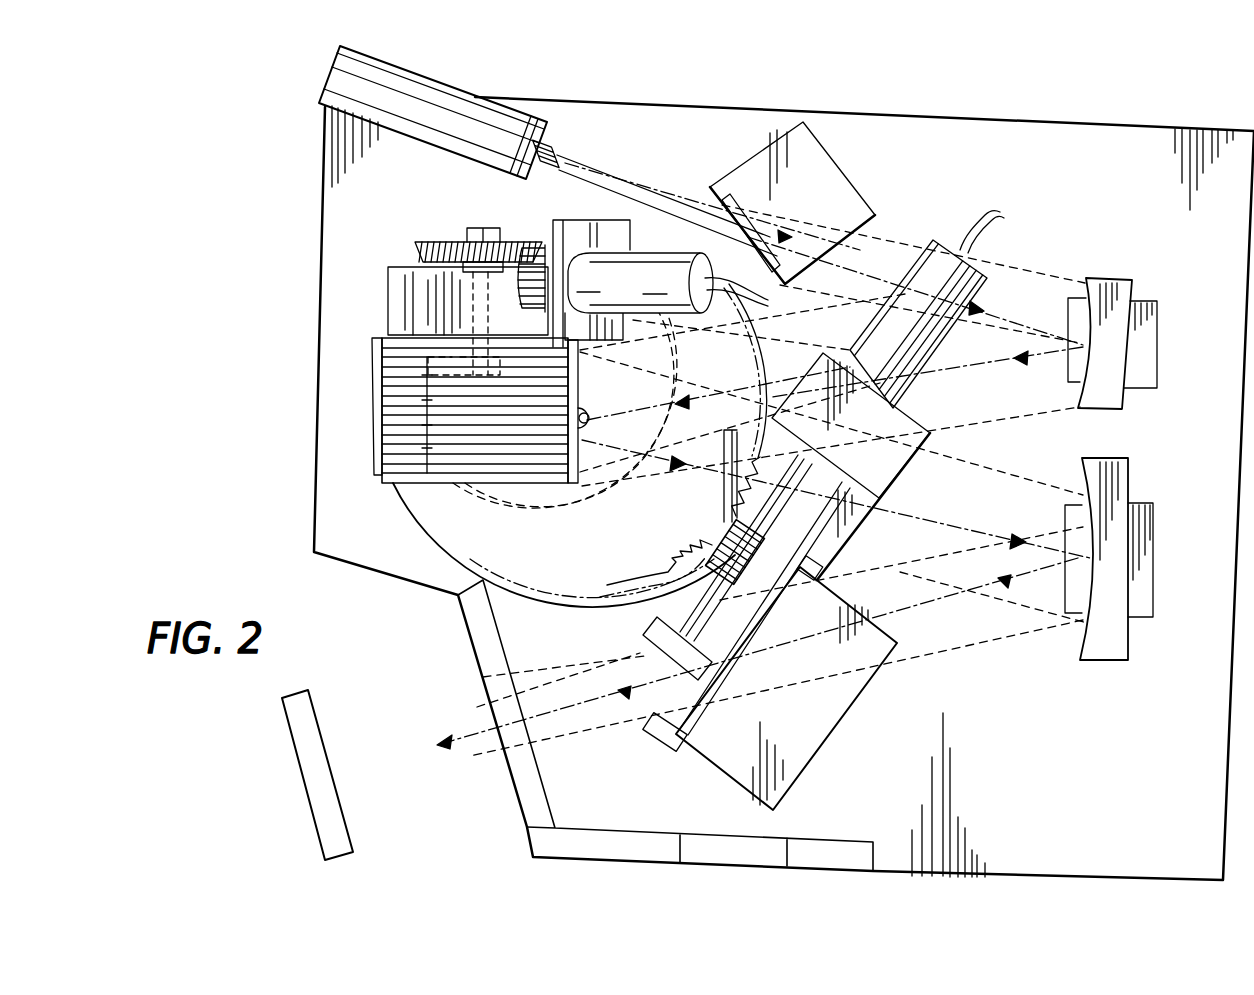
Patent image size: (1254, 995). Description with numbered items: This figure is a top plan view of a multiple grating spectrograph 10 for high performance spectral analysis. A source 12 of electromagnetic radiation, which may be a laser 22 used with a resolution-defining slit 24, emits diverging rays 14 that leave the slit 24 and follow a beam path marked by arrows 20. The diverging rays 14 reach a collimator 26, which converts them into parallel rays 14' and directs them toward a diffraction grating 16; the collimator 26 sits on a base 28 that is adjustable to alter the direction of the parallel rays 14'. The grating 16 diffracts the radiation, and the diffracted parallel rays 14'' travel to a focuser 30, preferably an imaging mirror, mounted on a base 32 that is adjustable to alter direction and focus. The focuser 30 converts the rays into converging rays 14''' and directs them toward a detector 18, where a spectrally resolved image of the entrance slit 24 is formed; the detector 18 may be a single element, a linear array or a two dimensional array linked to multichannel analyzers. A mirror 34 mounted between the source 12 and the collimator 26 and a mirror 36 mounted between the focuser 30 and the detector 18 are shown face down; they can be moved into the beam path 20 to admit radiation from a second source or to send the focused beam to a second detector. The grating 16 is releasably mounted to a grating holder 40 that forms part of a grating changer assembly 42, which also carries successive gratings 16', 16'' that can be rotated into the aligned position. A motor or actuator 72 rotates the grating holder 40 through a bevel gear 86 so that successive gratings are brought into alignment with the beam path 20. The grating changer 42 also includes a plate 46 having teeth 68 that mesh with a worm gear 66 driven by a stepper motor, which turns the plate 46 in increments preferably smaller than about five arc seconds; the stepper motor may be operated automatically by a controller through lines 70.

The multiple grating spectrograph 10 is at (779, 97).
The source 12 is at (423, 73).
The laser 22 is at (458, 120).
The resolution-defining slit 24 is at (558, 150).
The diverging rays 14 is at (667, 193).
The parallel rays 14' is at (832, 351).
The diffracted rays 14'' is at (833, 543).
The converging rays 14''' is at (776, 688).
The beam path 20 is at (852, 227).
The mirror 34 is at (810, 172).
The lines 70 is at (968, 218).
The collimator 26 is at (1120, 285).
The base 28 is at (1150, 337).
The focuser 30 is at (1105, 655).
The base 32 is at (1150, 580).
The mirror 36 is at (790, 772).
The grating changer assembly 42 is at (368, 290).
The bevel gear 86 is at (523, 245).
The motor 72 is at (668, 283).
The diffraction grating 16 is at (577, 434).
The mirror mount block 16' is at (417, 410).
The mirror mount plate 16'' is at (355, 406).
The grating holder 40 is at (430, 516).
The plate 46 is at (657, 561).
The worm gear 66 is at (712, 552).
The teeth 68 is at (672, 598).
The detector 18 is at (355, 838).